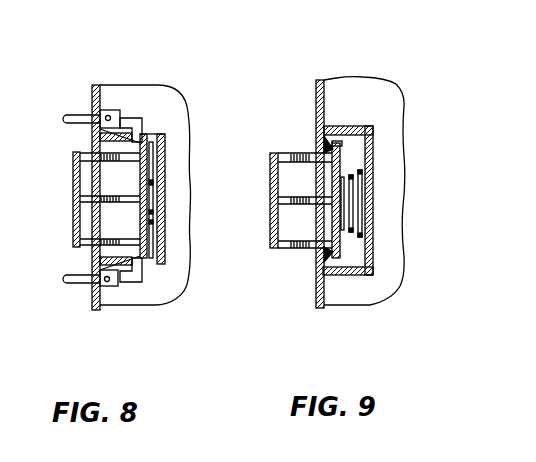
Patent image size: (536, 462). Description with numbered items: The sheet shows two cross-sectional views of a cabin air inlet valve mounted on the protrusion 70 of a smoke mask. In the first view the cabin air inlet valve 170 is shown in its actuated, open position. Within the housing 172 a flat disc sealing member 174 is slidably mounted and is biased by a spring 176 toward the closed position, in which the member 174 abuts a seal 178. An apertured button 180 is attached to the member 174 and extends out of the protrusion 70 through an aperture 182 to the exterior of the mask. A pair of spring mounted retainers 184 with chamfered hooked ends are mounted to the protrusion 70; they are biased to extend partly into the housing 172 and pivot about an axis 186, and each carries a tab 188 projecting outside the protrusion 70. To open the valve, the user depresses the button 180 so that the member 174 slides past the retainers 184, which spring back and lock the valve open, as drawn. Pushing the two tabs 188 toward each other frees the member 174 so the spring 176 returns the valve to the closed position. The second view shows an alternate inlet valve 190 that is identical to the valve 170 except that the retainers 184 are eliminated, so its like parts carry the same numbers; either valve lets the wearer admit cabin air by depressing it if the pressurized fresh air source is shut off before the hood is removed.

In FIG. 8, the protrusion 70 is at (93, 310).
In FIG. 9, the protrusion 70 is at (318, 310).
In FIG. 8, the cabin air inlet valve 170 is at (150, 78).
In FIG. 8, the housing 172 is at (157, 173).
In FIG. 9, the flat disc sealing member 174 is at (338, 256).
In FIG. 8, the spring 176 is at (148, 202).
In FIG. 9, the spring 176 is at (372, 203).
In FIG. 8, the seal 178 is at (97, 147).
In FIG. 9, the seal 178 is at (340, 148).
In FIG. 8, the apertured button 180 is at (82, 198).
In FIG. 9, the apertured button 180 is at (270, 245).
In FIG. 8, the aperture 182 is at (100, 160).
In FIG. 9, the aperture 182 is at (327, 247).
In FIG. 8, the spring mounted retainers 184 is at (143, 118).
In FIG. 8, the axis 186 is at (108, 115).
In FIG. 8, the tab 188 is at (72, 113).
In FIG. 9, the inlet valve 190 is at (415, 45).